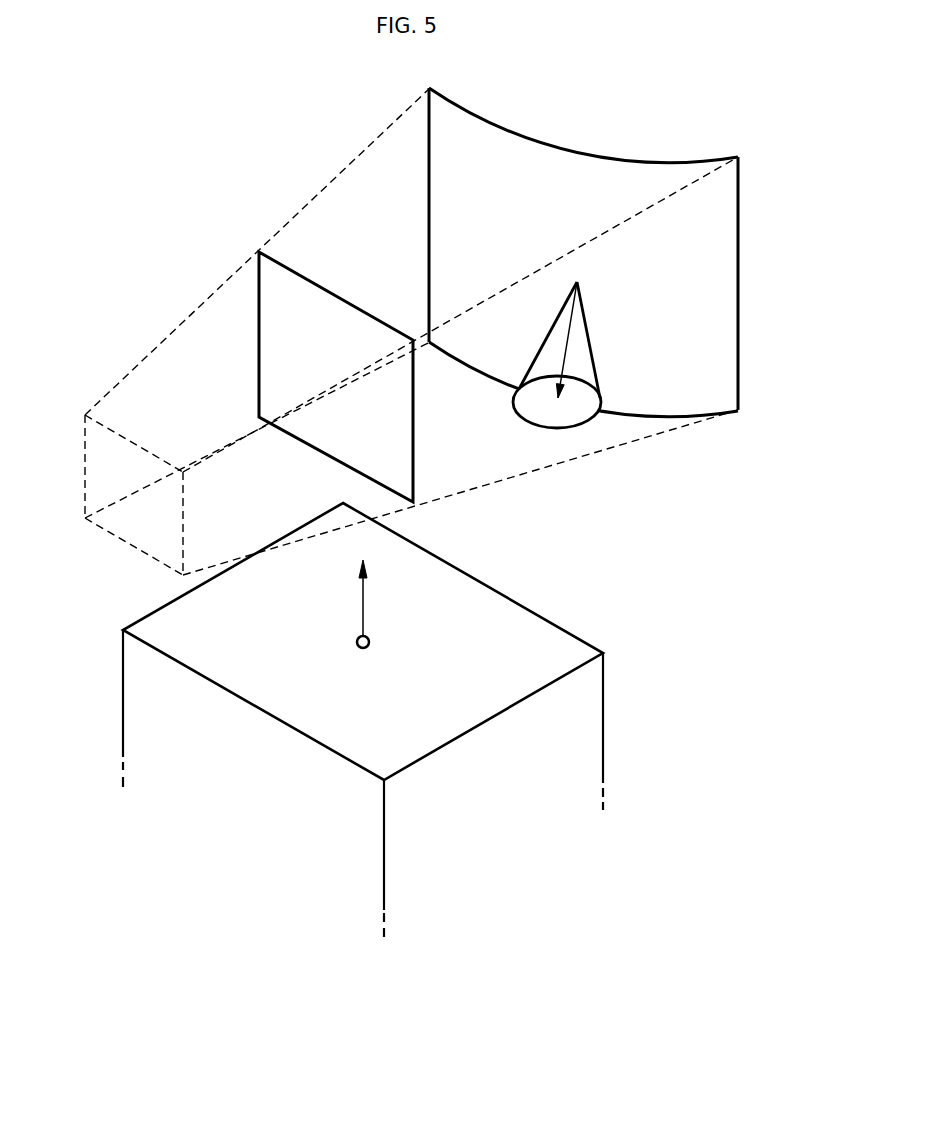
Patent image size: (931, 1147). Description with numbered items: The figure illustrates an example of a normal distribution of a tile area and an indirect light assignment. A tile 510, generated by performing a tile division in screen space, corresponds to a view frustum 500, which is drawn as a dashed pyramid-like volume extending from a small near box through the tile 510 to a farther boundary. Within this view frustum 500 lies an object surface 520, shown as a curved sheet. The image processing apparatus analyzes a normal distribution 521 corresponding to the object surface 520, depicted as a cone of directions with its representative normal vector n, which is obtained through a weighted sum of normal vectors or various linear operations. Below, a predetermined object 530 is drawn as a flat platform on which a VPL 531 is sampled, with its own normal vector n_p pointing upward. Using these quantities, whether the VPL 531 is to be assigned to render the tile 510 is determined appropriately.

The view frustum 500 is at (162, 333).
The tile 510 is at (258, 285).
The object surface 520 is at (577, 156).
The normal distribution 521 is at (577, 428).
The object 530 is at (477, 575).
The VPL 531 is at (368, 646).